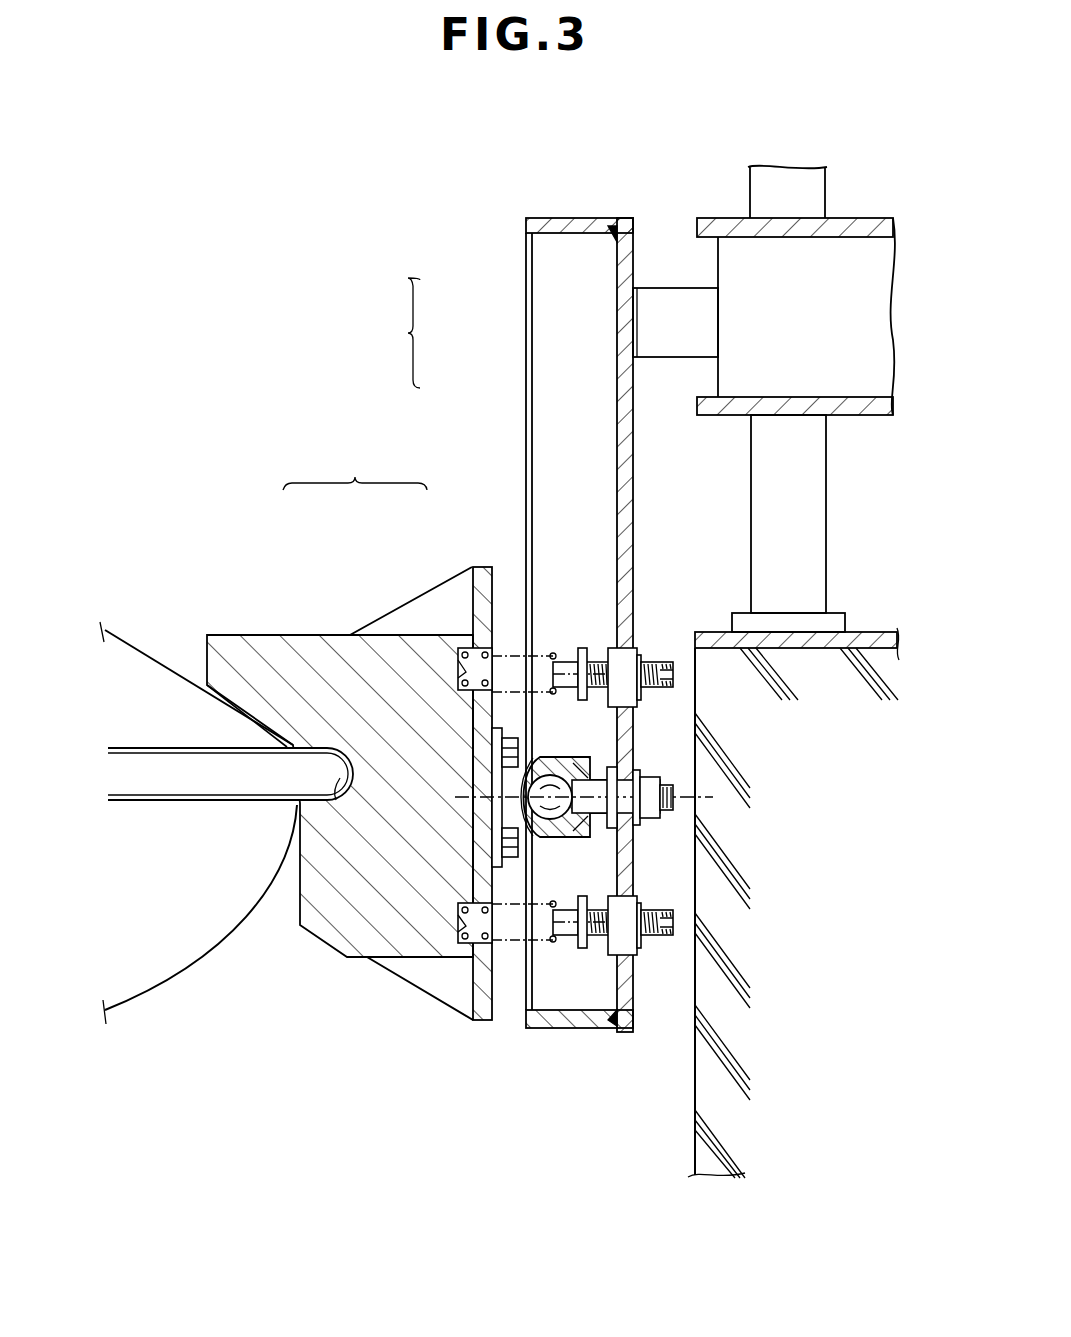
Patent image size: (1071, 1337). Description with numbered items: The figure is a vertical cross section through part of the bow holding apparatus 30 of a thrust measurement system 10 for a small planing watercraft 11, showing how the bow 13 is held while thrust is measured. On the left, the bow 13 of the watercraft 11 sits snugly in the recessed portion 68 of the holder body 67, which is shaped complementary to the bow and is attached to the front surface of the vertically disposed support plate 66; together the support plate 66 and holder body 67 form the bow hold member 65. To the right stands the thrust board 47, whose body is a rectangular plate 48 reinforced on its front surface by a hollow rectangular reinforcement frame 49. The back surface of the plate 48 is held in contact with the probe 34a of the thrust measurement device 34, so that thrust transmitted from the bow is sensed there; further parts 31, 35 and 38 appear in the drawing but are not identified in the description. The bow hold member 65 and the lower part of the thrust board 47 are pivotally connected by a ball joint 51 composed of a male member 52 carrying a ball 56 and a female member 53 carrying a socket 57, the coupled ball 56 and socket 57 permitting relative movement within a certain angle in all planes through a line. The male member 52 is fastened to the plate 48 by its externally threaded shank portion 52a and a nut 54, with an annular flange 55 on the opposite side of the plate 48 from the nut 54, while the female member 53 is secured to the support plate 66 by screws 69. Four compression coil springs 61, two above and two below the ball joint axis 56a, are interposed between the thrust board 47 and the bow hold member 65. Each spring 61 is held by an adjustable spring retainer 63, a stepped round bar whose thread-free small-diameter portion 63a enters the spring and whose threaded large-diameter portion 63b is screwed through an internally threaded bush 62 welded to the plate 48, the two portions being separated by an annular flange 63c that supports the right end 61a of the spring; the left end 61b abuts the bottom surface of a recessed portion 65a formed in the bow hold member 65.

The thrust measurement system 10 is at (286, 593).
The small planing watercraft 11 is at (127, 632).
The bow 13 is at (278, 768).
The bow holding apparatus 30 is at (639, 633).
The leg 31 is at (810, 552).
The thrust measurement device 34 is at (787, 307).
The probe 34a is at (620, 322).
The support member 35 is at (870, 213).
The base plate 38 is at (872, 638).
The thrust board 47 is at (499, 583).
The plate 48 is at (617, 400).
The reinforcement frame 49 is at (526, 313).
The ball joint 51 is at (580, 765).
The male member 52 is at (655, 790).
The externally threaded shank portion 52a is at (640, 805).
The female member 53 is at (497, 812).
The nut 54 is at (595, 820).
The annular flange 55 is at (650, 815).
The ball 56 is at (562, 668).
The axis of the ball joint 56a is at (665, 800).
The socket 57 is at (597, 760).
The compression coil spring 61 is at (577, 647).
The one end of the compression coil spring 61a is at (580, 697).
The opposite end of the compression coil spring 61b is at (462, 652).
The internally threaded bush 62 is at (660, 660).
The adjustable spring retainer 63 is at (758, 783).
The thread-free small-diameter portion 63a is at (622, 648).
The threaded large-diameter portion 63b is at (672, 672).
The annular flange 63c is at (668, 668).
The bow hold member 65 is at (355, 467).
The recessed portion 65a is at (463, 650).
The support plate 66 is at (476, 610).
The holder body 67 is at (305, 640).
The recessed portion 68 is at (335, 792).
The screws 69 is at (507, 737).